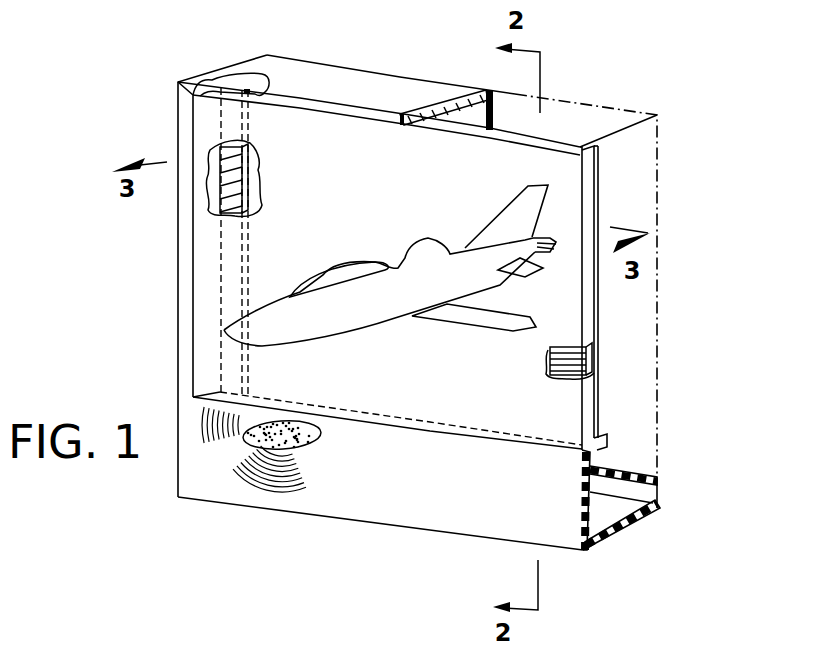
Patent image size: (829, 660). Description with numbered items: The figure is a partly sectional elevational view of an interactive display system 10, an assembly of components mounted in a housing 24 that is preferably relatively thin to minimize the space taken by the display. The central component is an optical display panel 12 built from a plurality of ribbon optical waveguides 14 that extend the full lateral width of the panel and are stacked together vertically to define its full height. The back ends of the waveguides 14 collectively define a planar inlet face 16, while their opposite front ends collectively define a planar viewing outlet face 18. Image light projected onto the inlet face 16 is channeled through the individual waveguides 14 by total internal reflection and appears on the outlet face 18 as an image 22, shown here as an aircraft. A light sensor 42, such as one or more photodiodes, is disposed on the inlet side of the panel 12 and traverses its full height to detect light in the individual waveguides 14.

The interactive display system 10 is at (696, 206).
The optical display panel 12 is at (572, 134).
The ribbon optical waveguides 14 is at (547, 362).
The planar inlet face 16 is at (547, 136).
The planar viewing outlet face 18 is at (430, 386).
The image 22 is at (337, 263).
The housing 24 is at (380, 74).
The light sensor 42 is at (197, 183).